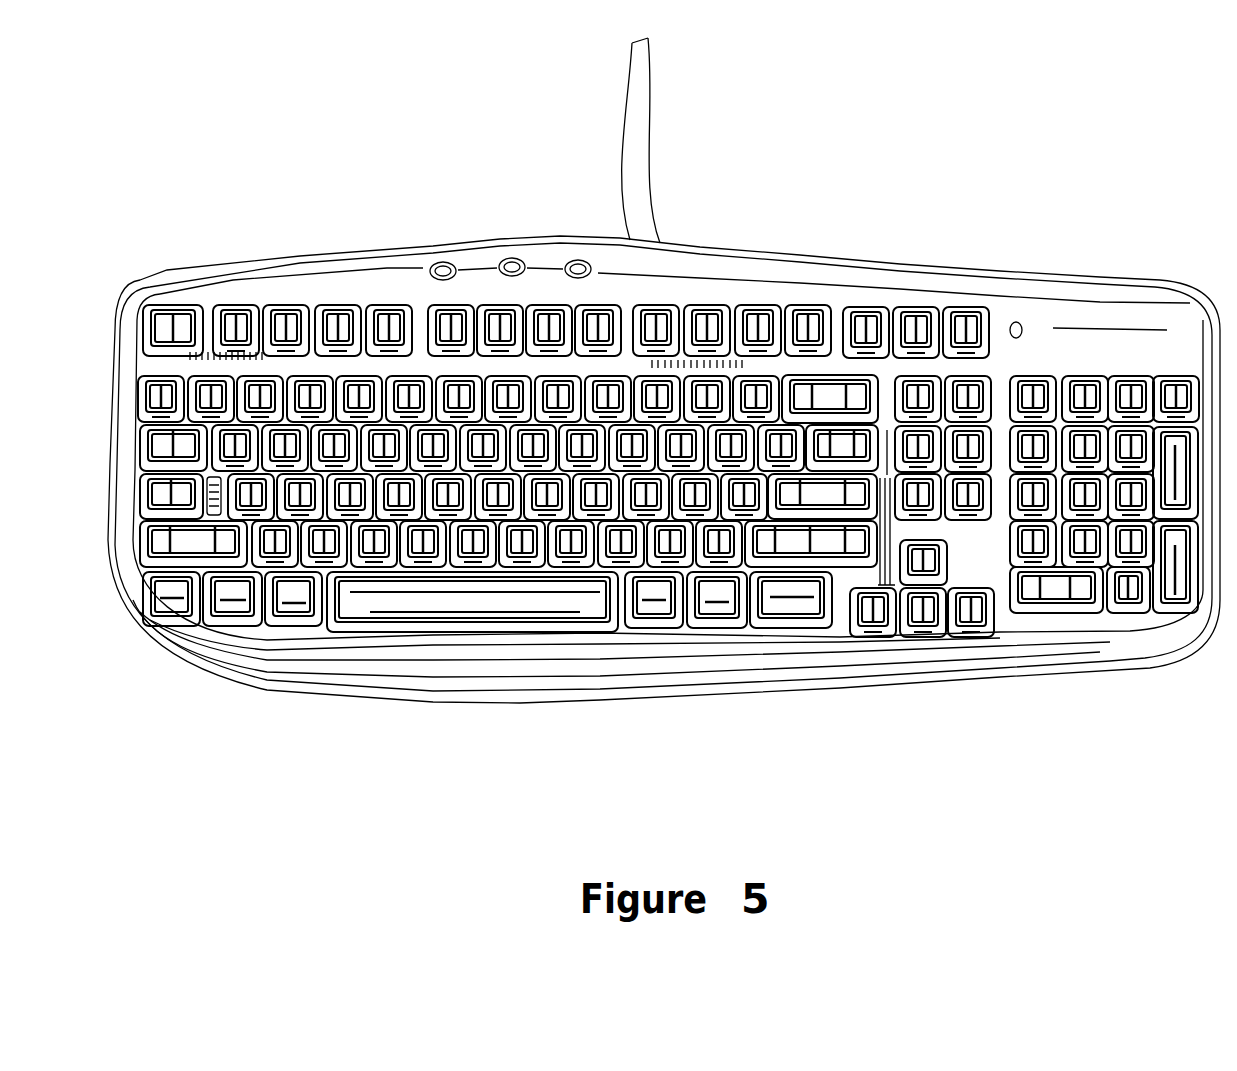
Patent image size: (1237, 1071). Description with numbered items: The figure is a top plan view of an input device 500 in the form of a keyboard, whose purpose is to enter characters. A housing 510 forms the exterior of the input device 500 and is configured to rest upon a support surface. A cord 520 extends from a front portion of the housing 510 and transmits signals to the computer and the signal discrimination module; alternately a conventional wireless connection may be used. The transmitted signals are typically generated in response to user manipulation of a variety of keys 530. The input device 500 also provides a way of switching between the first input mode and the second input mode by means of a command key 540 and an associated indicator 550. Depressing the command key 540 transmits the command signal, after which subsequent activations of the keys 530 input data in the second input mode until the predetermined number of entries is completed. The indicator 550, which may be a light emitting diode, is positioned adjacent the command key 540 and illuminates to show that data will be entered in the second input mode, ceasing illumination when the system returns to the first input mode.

The input device 500 is at (185, 177).
The housing 510 is at (1078, 316).
The cord 520 is at (645, 160).
The keys 530 is at (367, 395).
The command key 540 is at (967, 332).
The indicator 550 is at (1015, 321).